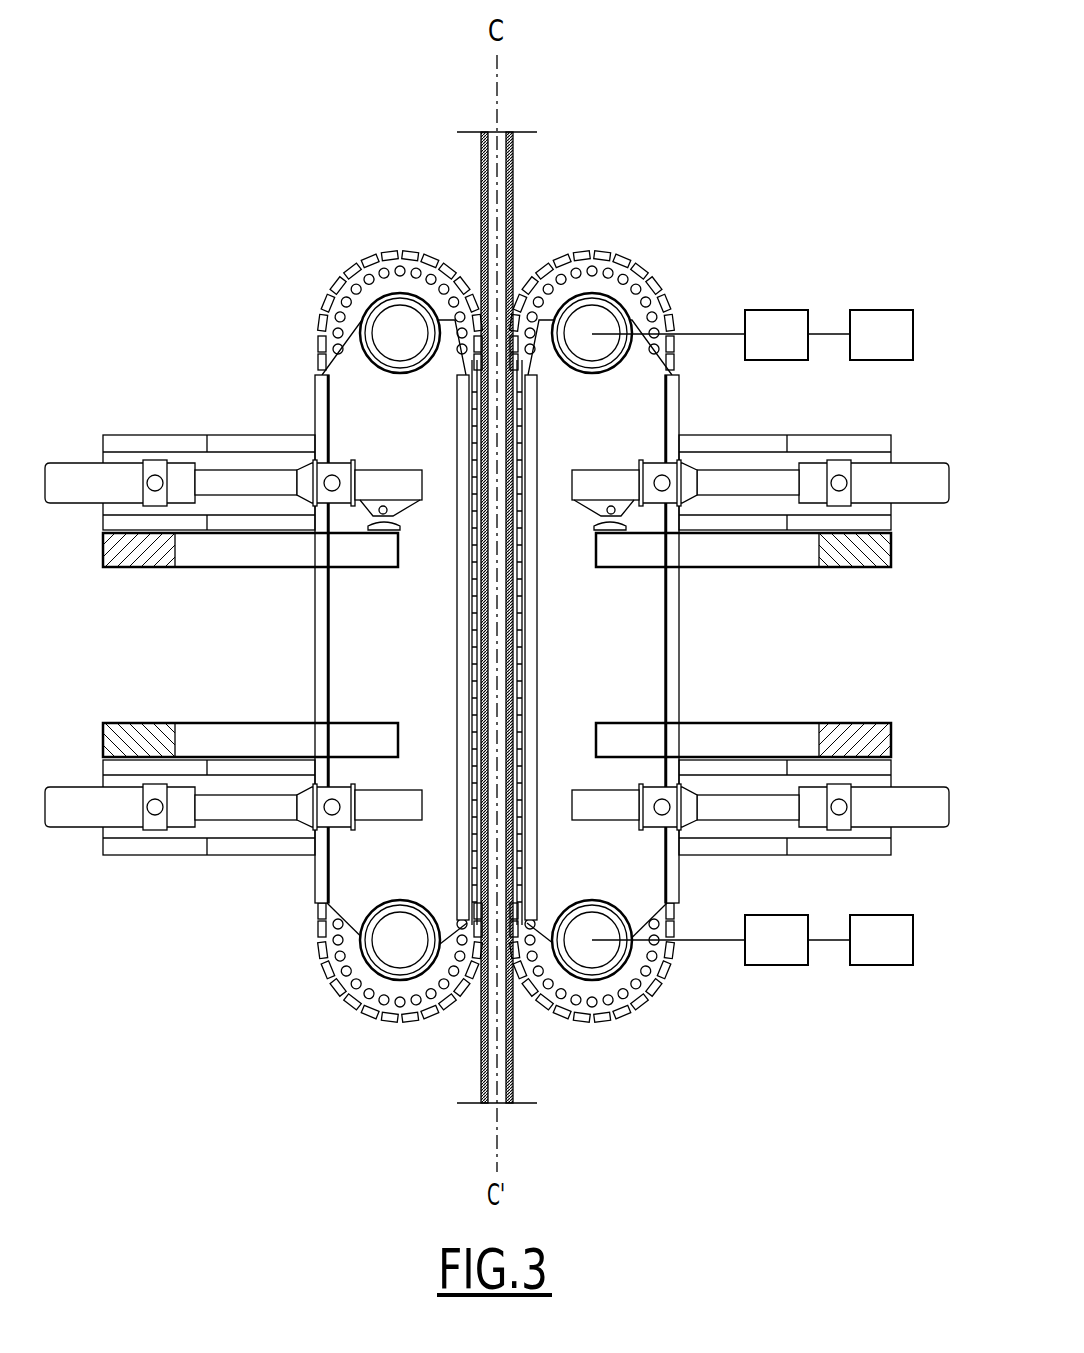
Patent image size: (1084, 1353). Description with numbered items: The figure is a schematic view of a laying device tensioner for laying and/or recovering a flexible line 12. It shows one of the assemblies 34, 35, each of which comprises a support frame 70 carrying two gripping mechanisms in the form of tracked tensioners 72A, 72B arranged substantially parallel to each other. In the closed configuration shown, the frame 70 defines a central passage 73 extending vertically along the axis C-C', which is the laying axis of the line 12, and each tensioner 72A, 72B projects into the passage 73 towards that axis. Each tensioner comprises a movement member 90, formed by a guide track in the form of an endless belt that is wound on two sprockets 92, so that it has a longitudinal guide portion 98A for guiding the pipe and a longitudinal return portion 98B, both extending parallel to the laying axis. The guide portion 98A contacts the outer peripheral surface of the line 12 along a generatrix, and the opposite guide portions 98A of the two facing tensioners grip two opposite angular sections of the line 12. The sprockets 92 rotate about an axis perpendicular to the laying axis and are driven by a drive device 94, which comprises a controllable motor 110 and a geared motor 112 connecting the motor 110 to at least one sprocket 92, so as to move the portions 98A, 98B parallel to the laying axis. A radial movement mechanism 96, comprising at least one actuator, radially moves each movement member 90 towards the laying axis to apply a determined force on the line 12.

The flexible line 12 is at (465, 1055).
The assembly 34 is at (501, 586).
The assembly 35 is at (501, 606).
The support frame 70 is at (501, 642).
The tracked tensioner 72A is at (303, 330).
The tracked tensioner 72B is at (594, 713).
The central passage 73 is at (517, 987).
The movement member 90 is at (376, 262).
The sprocket 92 is at (377, 290).
The drive device 94 is at (752, 590).
The radial movement mechanism 96 is at (196, 885).
The guide portion 98A is at (462, 660).
The return portion 98B is at (318, 650).
The motor 110 is at (880, 323).
The geared motor 112 is at (770, 323).